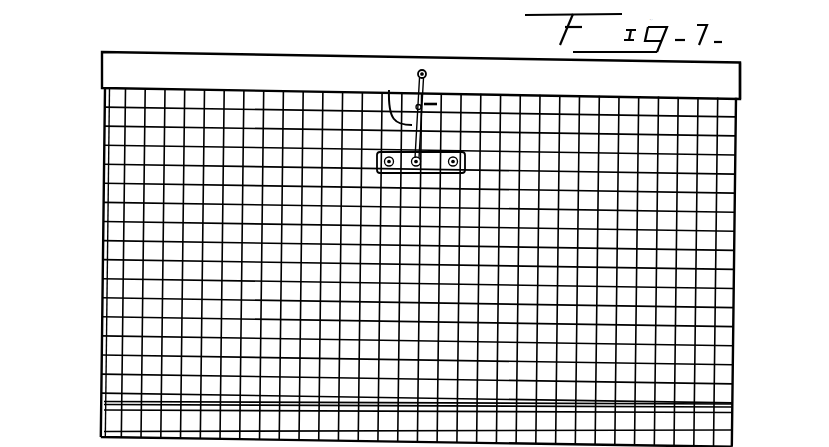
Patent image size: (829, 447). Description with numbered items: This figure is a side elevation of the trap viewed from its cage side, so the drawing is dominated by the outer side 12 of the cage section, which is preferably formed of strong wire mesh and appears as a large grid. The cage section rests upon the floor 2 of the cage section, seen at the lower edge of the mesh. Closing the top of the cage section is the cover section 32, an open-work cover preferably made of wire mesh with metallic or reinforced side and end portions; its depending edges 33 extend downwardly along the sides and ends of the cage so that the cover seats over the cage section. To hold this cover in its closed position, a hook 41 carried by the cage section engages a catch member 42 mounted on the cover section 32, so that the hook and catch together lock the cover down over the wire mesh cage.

The floor of the cage section 2 is at (110, 417).
The outer side of the cage section 12 is at (173, 163).
The cover section 32 is at (253, 54).
The depending edges of the cover section 33 is at (717, 80).
The hook 41 is at (389, 90).
The catch member 42 is at (425, 88).